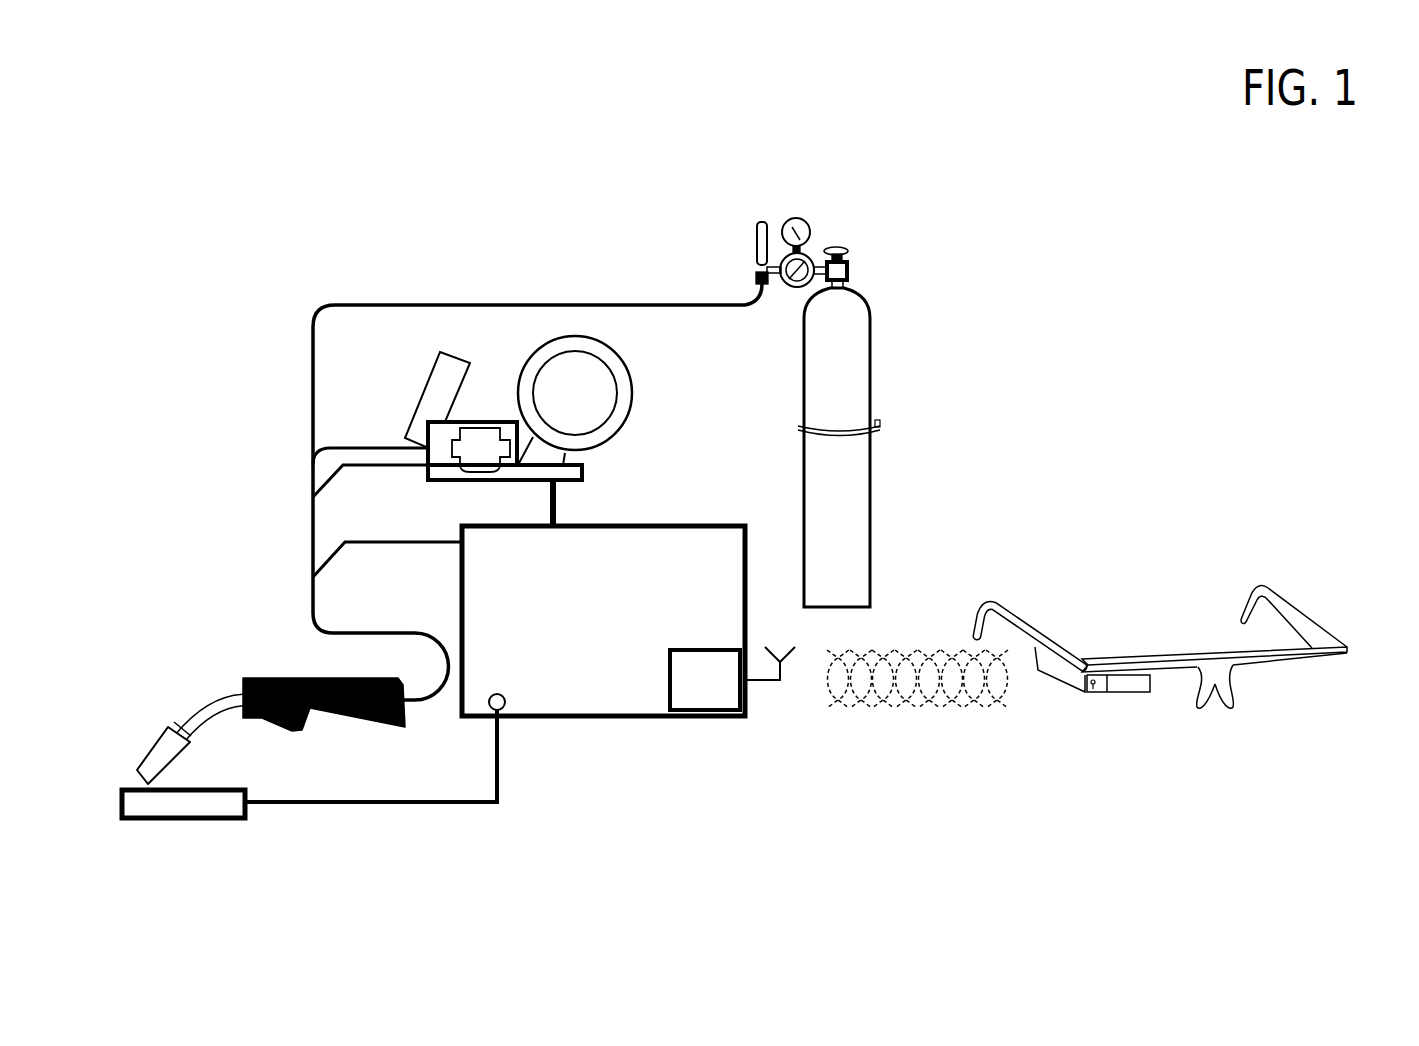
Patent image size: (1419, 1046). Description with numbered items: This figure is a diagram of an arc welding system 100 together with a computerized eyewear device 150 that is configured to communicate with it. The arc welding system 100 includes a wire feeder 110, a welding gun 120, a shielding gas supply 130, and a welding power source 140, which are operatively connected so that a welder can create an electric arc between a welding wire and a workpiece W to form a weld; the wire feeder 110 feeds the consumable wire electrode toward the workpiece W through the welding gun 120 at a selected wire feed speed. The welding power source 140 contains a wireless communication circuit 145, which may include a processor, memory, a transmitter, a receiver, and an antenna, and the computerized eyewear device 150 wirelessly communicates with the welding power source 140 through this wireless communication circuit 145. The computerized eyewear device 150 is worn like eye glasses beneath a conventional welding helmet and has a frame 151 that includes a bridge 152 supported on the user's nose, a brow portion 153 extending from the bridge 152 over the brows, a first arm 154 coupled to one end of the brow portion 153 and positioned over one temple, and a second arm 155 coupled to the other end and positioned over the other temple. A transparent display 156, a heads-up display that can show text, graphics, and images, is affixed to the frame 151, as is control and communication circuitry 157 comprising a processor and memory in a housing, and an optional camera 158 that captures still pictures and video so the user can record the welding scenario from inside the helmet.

The arc welding system 100 is at (280, 186).
The wire feeder 110 is at (483, 422).
The welding gun 120 is at (217, 693).
The shielding gas supply 130 is at (867, 300).
The welding power source 140 is at (565, 717).
The wireless communication circuit 145 is at (708, 712).
The computerized eyewear device 150 is at (1338, 676).
The frame 151 is at (1336, 620).
The bridge 152 is at (1228, 670).
The brow portion 153 is at (1168, 663).
The first arm 154 is at (1018, 621).
The second arm 155 is at (1287, 614).
The transparent display 156 is at (1135, 692).
The control and communication circuitry 157 is at (1052, 672).
The camera 158 is at (1093, 692).
The workpiece W is at (173, 818).